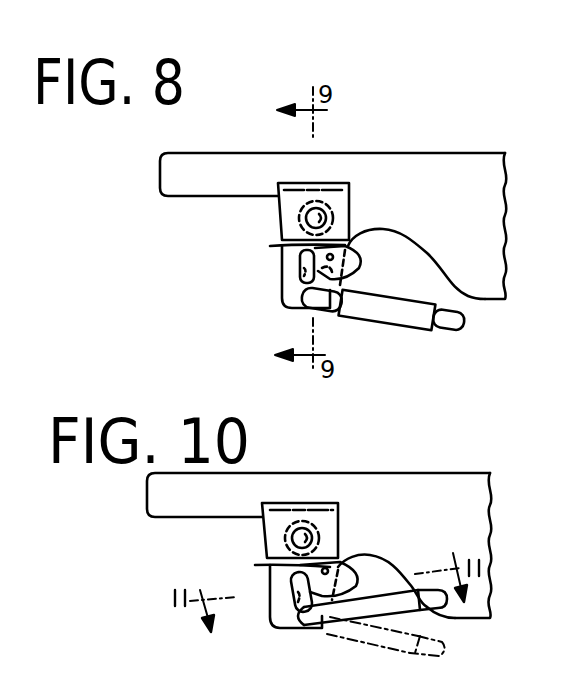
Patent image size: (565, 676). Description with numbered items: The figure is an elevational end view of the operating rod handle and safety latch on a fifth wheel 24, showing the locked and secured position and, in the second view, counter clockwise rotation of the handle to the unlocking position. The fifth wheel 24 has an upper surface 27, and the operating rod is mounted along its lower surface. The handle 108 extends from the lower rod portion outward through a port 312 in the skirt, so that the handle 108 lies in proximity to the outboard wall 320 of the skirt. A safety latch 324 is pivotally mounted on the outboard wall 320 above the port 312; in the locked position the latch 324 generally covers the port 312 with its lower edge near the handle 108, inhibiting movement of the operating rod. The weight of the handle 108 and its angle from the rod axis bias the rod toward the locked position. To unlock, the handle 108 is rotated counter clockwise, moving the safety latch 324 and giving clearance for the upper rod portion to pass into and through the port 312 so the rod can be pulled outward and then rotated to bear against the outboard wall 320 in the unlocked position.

In FIG. 8, the fifth wheel 24 is at (400, 152).
In FIG. 10, the fifth wheel 24 is at (415, 473).
In FIG. 8, the upper surface 27 is at (226, 152).
In FIG. 10, the upper surface 27 is at (288, 473).
In FIG. 8, the handle 108 is at (402, 320).
In FIG. 10, the handle 108 is at (470, 628).
In FIG. 10, the port 312 is at (290, 588).
In FIG. 8, the outboard wall 320 is at (290, 297).
In FIG. 10, the outboard wall 320 is at (276, 621).
In FIG. 8, the safety latch 324 is at (305, 244).
In FIG. 10, the safety latch 324 is at (335, 572).